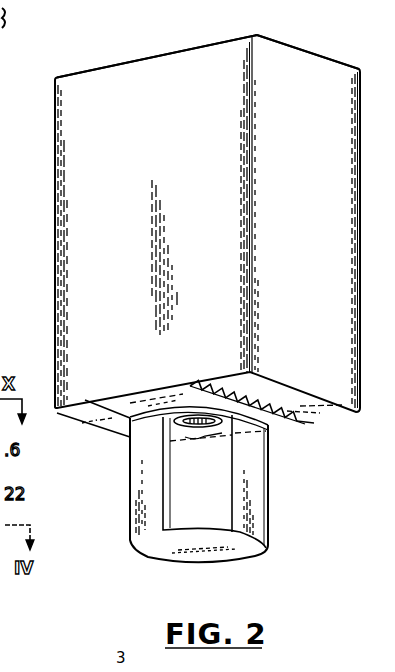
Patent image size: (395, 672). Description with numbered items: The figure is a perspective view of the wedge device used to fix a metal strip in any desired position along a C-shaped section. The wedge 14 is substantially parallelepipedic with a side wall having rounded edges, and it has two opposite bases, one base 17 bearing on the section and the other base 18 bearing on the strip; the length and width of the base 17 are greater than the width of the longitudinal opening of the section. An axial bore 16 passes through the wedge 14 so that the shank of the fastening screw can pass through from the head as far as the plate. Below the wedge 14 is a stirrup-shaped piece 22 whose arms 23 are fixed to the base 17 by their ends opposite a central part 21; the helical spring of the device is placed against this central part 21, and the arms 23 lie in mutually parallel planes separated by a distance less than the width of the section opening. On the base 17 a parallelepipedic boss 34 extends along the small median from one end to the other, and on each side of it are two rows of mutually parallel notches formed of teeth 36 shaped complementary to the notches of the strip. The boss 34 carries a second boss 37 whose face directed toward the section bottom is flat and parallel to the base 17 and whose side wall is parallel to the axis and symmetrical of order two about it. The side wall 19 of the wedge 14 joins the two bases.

The wedge 14 is at (50, 193).
The axial bore 16 is at (197, 427).
The base 17 is at (310, 406).
The base 18 is at (290, 45).
The side wall 19 is at (83, 238).
The central part 21 is at (205, 552).
The stirrup-shaped piece 22 is at (118, 515).
The arms 23 is at (143, 470).
The parallelepipedic boss 34 is at (112, 400).
The teeth 36 is at (203, 383).
The second boss 37 is at (230, 433).